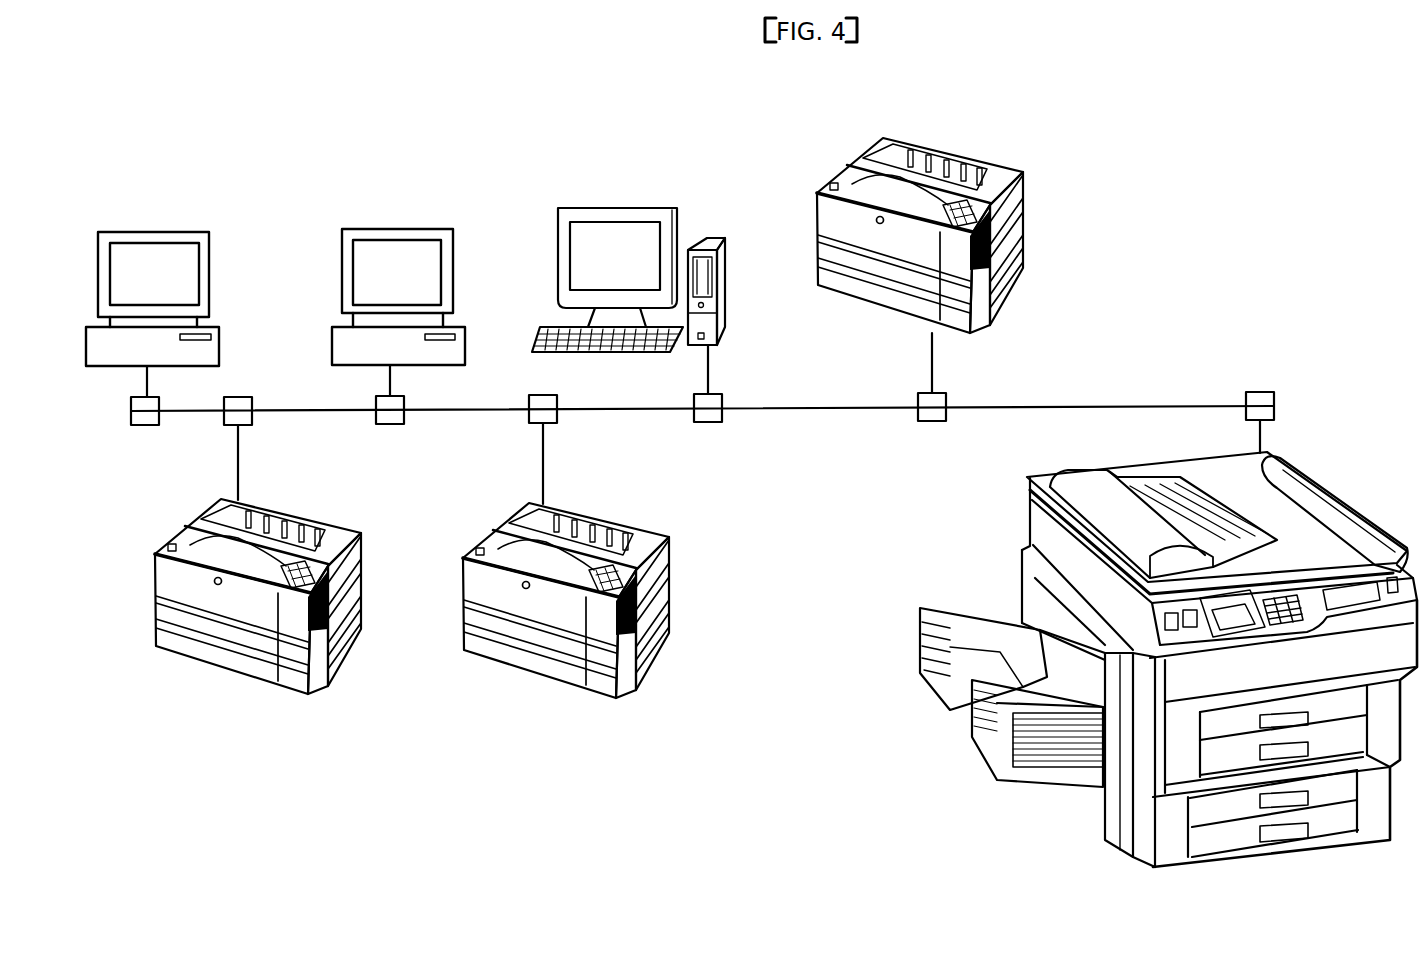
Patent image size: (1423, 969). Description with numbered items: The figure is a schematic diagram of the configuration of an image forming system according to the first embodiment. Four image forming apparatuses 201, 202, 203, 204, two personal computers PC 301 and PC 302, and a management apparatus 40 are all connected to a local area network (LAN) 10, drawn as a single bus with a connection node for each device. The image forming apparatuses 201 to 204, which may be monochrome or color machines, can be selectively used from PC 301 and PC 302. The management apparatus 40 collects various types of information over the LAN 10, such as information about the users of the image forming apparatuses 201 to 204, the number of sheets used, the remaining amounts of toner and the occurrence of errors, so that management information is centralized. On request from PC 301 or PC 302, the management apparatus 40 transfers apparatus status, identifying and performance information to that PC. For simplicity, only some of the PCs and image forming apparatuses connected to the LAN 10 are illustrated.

The local area network (LAN) 10 is at (1105, 407).
The management apparatus 40 is at (723, 238).
The image forming apparatus 201 is at (318, 513).
The image forming apparatus 202 is at (625, 518).
The image forming apparatus 203 is at (980, 157).
The image forming apparatus 204 is at (1348, 508).
The PC 301 is at (218, 328).
The PC 302 is at (462, 326).